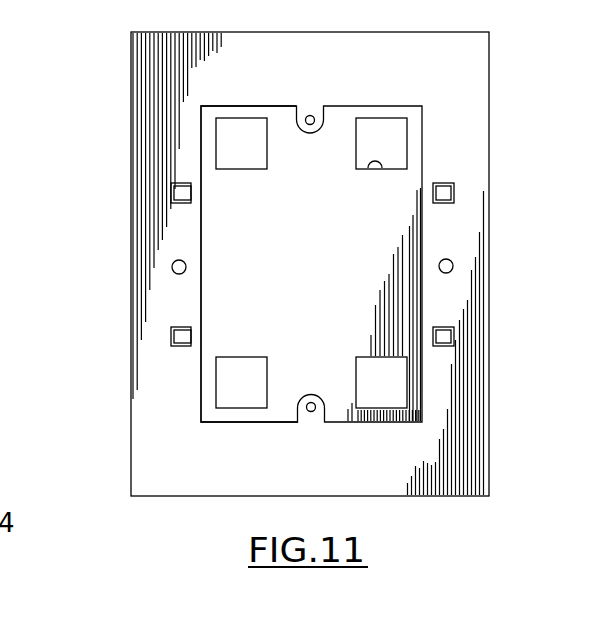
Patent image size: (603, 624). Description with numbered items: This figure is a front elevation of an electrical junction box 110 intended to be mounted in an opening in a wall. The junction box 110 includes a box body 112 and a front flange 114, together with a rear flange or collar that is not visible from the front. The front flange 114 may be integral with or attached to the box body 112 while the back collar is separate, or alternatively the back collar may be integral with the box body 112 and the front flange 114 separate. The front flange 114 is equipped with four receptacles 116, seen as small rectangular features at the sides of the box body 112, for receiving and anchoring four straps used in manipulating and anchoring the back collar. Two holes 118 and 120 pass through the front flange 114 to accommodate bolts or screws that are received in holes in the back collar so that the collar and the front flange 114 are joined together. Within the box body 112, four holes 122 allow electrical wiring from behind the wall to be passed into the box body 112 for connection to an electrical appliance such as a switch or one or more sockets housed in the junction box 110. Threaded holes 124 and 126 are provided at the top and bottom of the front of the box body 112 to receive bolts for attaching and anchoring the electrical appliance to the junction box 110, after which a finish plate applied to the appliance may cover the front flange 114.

The junction box 110 is at (122, 150).
The box body 112 is at (310, 302).
The front flange 114 is at (472, 423).
The receptacles 116 is at (454, 190).
The hole 118 is at (172, 266).
The hole 120 is at (453, 266).
The holes 122 is at (368, 170).
The threaded hole 124 is at (310, 115).
The threaded hole 126 is at (311, 412).